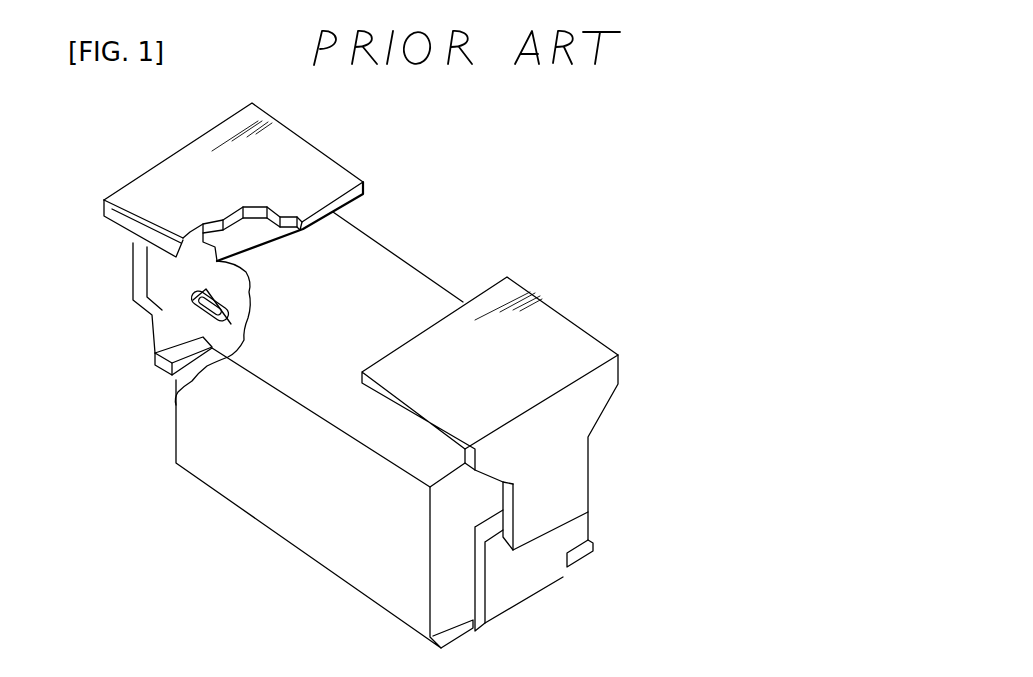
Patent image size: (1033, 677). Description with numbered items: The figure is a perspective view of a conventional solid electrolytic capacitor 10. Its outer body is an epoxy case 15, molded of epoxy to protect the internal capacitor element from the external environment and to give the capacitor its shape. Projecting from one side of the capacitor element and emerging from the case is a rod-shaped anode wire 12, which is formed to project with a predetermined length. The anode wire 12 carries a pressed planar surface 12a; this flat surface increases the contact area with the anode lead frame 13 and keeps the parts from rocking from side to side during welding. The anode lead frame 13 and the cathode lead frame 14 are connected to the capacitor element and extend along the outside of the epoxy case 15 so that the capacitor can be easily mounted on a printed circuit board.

The solid electrolytic capacitor 10 is at (468, 204).
The anode wire 12 is at (233, 324).
The planar surface 12a is at (215, 290).
The anode lead frame 13 is at (177, 305).
The cathode lead frame 14 is at (522, 578).
The epoxy case 15 is at (293, 512).